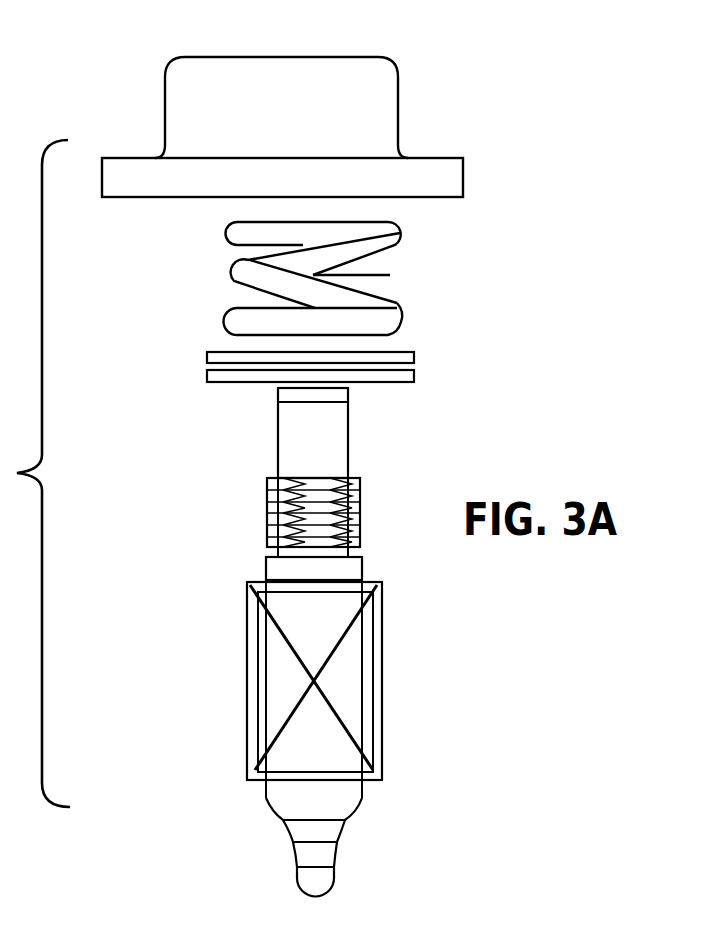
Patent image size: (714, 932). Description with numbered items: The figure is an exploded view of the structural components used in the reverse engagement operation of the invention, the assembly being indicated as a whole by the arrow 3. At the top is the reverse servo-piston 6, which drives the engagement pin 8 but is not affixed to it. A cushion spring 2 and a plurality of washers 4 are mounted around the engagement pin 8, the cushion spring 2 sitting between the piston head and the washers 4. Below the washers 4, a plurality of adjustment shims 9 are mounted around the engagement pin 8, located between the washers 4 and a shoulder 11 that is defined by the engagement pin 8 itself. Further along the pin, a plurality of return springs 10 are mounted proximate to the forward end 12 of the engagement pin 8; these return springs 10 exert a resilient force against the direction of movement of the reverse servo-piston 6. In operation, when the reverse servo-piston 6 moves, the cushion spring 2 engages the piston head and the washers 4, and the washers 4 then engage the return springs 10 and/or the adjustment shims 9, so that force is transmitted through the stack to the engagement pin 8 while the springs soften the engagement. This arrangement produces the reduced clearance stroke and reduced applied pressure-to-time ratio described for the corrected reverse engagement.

The cushion spring 2 is at (400, 232).
The coupler assembly 3 is at (412, 630).
The washers 4 is at (212, 366).
The reverse servo-piston 6 is at (395, 60).
The engagement pin 8 is at (348, 408).
The adjustment shims 9 is at (358, 495).
The return springs 10 is at (382, 660).
The shoulder 11 is at (265, 558).
The forward end 12 is at (362, 798).